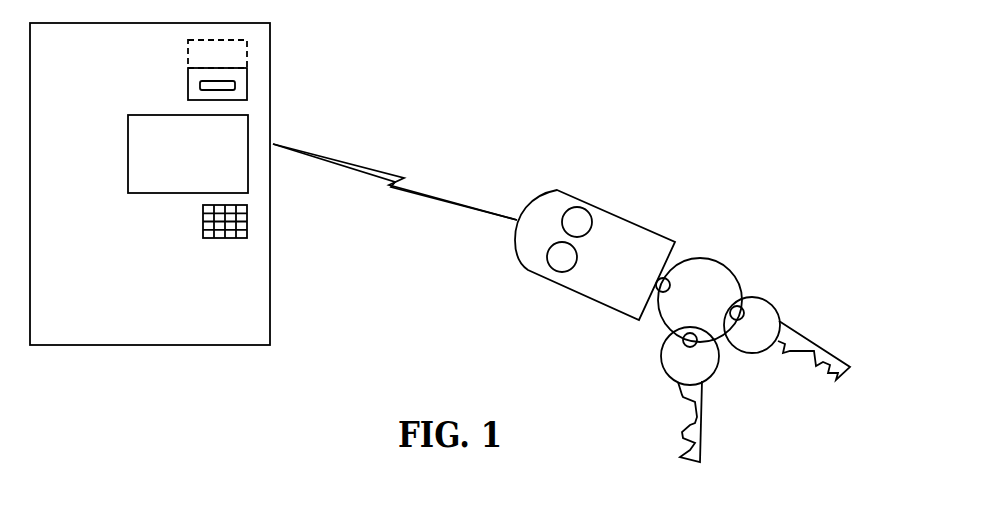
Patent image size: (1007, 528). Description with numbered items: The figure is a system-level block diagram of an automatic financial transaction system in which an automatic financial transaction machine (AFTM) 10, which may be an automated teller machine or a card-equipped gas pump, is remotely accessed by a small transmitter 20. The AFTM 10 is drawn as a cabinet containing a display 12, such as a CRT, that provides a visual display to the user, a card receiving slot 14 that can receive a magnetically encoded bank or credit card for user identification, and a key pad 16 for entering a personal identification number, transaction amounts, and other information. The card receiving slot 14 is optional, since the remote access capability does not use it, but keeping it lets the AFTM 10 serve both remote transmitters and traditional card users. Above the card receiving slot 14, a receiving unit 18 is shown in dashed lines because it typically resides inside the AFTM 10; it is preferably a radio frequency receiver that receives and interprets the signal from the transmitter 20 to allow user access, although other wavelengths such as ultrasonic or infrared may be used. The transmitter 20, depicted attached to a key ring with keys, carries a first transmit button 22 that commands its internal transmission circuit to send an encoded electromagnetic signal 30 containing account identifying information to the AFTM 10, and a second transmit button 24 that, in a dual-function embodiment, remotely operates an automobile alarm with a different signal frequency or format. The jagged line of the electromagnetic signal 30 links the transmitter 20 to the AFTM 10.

The automatic financial transaction machine (AFTM) 10 is at (270, 298).
The display 12 is at (138, 195).
The card receiving slot 14 is at (200, 86).
The key pad 16 is at (212, 238).
The receiving unit 18 is at (188, 51).
The transmitter 20 is at (587, 300).
The transmit button 22 is at (550, 258).
The second transmit button 24 is at (570, 222).
The electromagnetic signal 30 is at (392, 186).